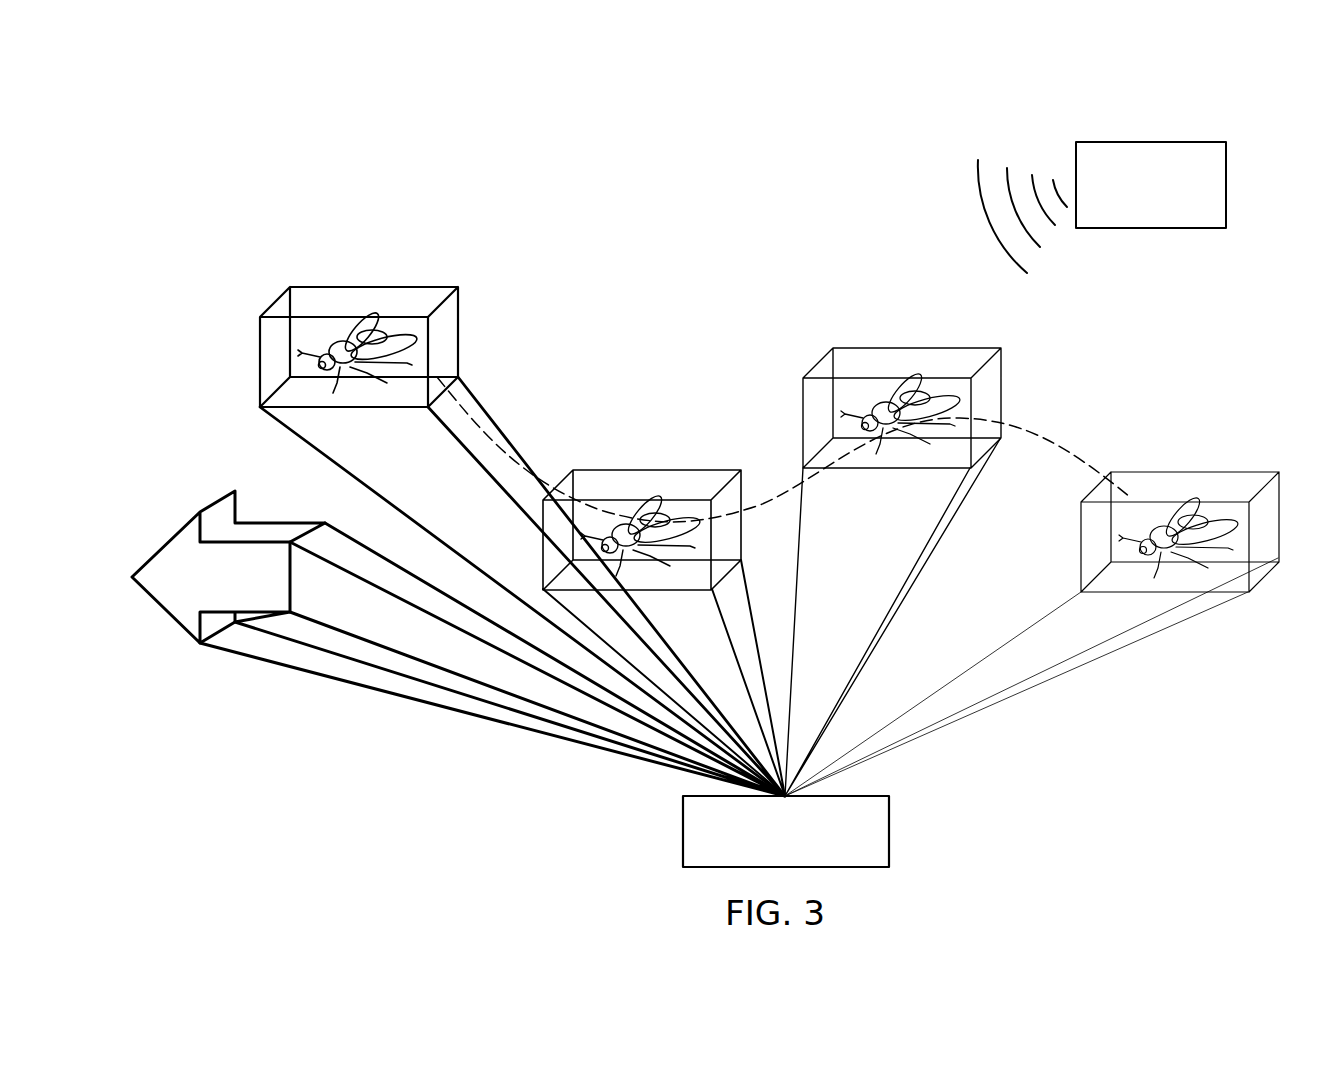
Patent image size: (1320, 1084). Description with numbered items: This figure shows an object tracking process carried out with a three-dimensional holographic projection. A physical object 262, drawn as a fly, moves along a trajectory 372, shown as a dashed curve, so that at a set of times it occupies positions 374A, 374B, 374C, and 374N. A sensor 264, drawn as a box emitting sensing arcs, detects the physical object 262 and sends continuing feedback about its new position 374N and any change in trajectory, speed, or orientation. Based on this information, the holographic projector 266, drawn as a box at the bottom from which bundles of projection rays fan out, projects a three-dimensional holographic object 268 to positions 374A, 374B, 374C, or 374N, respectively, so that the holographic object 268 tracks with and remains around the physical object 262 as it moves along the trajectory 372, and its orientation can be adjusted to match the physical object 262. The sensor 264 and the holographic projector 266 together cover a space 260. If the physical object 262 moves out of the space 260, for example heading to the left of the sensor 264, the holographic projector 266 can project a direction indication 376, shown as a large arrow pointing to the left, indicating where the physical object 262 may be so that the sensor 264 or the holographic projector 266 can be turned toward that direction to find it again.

The space 260 is at (967, 774).
The physical object 262 is at (377, 312).
The sensor 264 is at (1130, 142).
The holographic projector 266 is at (682, 835).
The 3-D holographic object 268 is at (240, 394).
The trajectory 372 is at (1047, 453).
The position 374A is at (1203, 465).
The position 374B is at (927, 340).
The position 374C is at (675, 458).
The new position 374N is at (359, 299).
The direction indication 376 is at (175, 642).